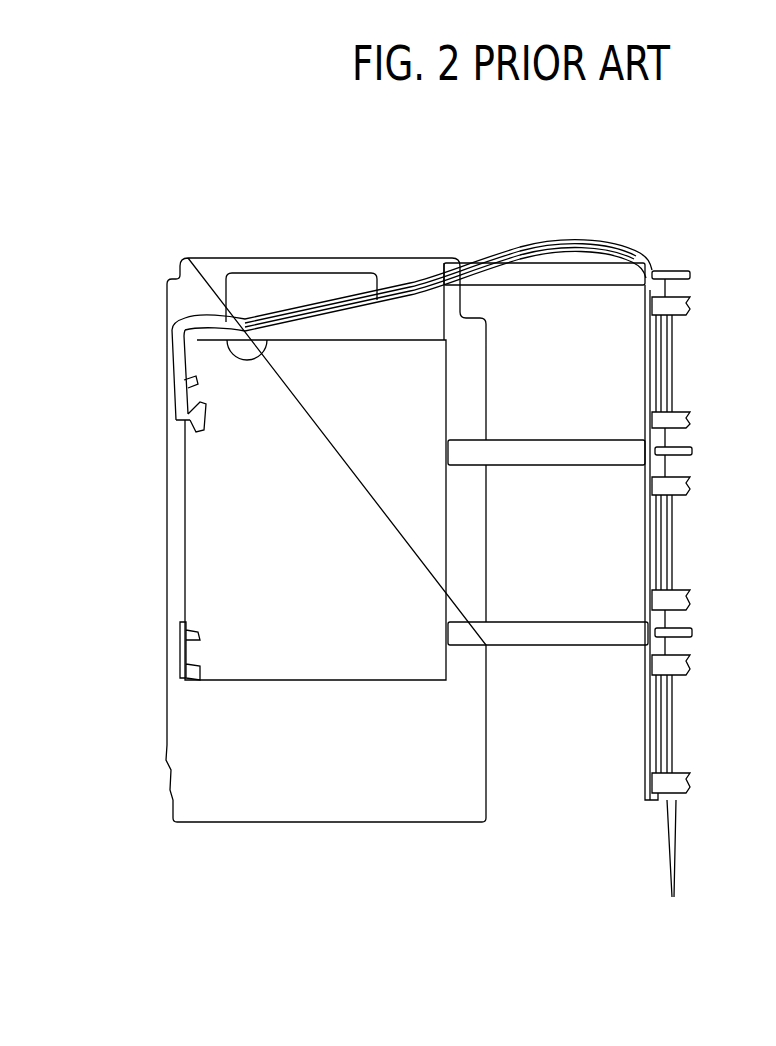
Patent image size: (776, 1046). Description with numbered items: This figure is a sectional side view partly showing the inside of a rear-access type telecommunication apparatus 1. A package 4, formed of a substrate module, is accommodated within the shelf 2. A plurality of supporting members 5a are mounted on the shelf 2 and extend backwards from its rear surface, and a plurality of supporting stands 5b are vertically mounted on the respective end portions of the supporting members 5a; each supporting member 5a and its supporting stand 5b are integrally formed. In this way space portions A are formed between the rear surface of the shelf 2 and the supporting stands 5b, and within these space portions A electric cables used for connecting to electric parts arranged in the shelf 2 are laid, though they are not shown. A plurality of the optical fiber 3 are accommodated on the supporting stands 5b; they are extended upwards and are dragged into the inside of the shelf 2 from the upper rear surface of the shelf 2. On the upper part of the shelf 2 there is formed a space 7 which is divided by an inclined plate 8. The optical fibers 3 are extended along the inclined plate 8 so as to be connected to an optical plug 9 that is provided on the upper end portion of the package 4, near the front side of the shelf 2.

The telecommunication apparatus 1 is at (121, 172).
The shelf 2 is at (203, 745).
The optical fiber 3 is at (677, 523).
The package 4 is at (213, 517).
The supporting member 5a is at (568, 276).
The supporting stand 5b is at (655, 748).
The space 7 is at (413, 265).
The inclined plate 8 is at (272, 333).
The optical plug 9 is at (192, 420).
The space portion A is at (613, 383).